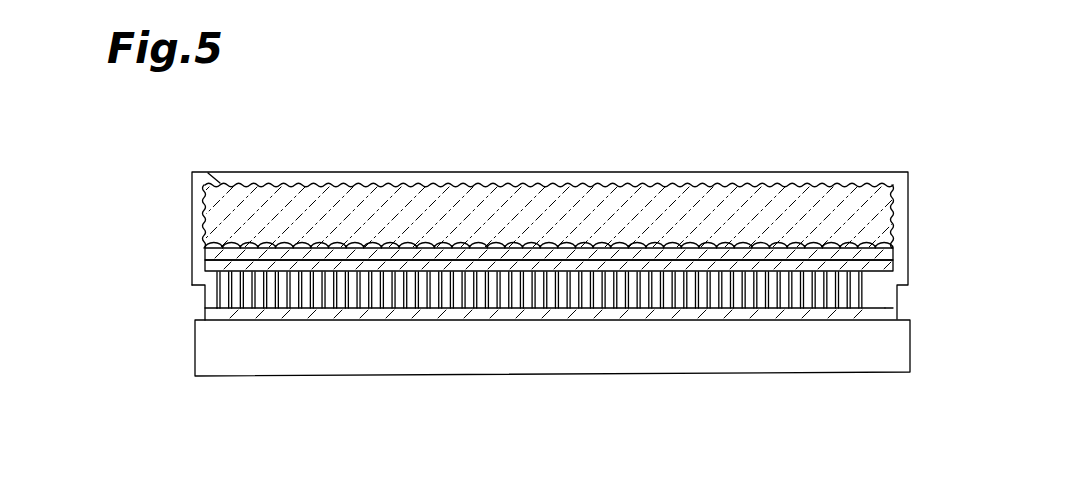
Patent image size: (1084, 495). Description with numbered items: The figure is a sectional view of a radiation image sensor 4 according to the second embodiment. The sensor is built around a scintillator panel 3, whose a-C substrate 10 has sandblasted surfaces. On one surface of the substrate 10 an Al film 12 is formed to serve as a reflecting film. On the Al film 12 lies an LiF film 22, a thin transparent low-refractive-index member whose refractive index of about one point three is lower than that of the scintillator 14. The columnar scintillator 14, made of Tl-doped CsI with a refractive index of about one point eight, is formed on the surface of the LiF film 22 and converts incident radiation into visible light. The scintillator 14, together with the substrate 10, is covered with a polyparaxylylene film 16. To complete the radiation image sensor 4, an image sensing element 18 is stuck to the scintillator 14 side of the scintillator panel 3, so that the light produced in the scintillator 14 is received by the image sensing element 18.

The radiation image sensor 4 is at (533, 127).
The scintillator panel 3 is at (597, 167).
The a-C substrate 10 is at (780, 202).
The Al film 12 is at (705, 252).
The LiF film 22 is at (431, 265).
The scintillator 14 is at (823, 300).
The polyparaxylylene film 16 is at (655, 315).
The image sensing element 18 is at (537, 367).